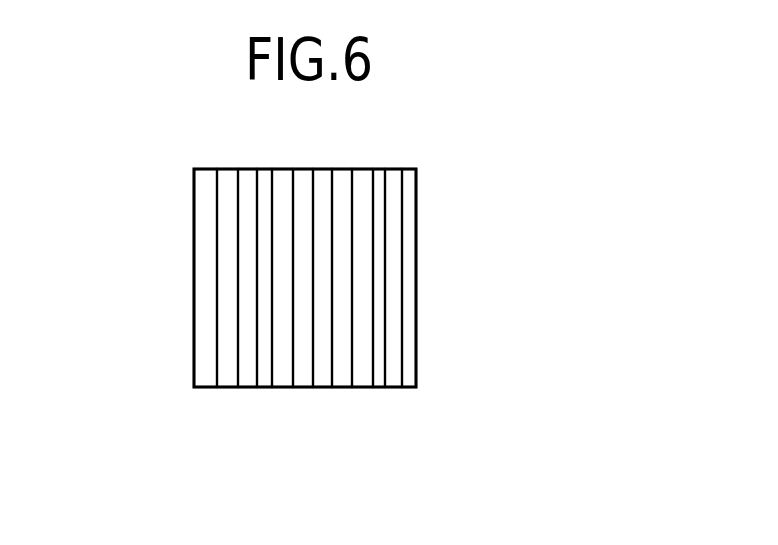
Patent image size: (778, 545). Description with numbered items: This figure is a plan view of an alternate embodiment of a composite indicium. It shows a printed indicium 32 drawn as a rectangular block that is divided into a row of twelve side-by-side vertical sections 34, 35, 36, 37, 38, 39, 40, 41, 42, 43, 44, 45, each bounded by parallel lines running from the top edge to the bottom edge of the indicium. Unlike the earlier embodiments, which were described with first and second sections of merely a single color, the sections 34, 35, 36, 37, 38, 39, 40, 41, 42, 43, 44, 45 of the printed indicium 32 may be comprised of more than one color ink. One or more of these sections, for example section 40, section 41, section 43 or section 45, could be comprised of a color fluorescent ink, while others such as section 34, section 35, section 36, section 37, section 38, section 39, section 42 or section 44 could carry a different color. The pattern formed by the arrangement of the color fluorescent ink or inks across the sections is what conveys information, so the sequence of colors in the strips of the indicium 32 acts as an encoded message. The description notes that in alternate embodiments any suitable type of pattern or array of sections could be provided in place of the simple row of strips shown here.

The printed indicium 32 is at (124, 180).
The section 34 is at (205, 388).
The section 35 is at (223, 388).
The section 36 is at (248, 388).
The section 37 is at (263, 388).
The section 38 is at (277, 388).
The section 39 is at (303, 388).
The section 40 is at (323, 182).
The section 41 is at (343, 182).
The section 42 is at (360, 388).
The section 43 is at (380, 178).
The section 44 is at (393, 388).
The section 45 is at (407, 303).